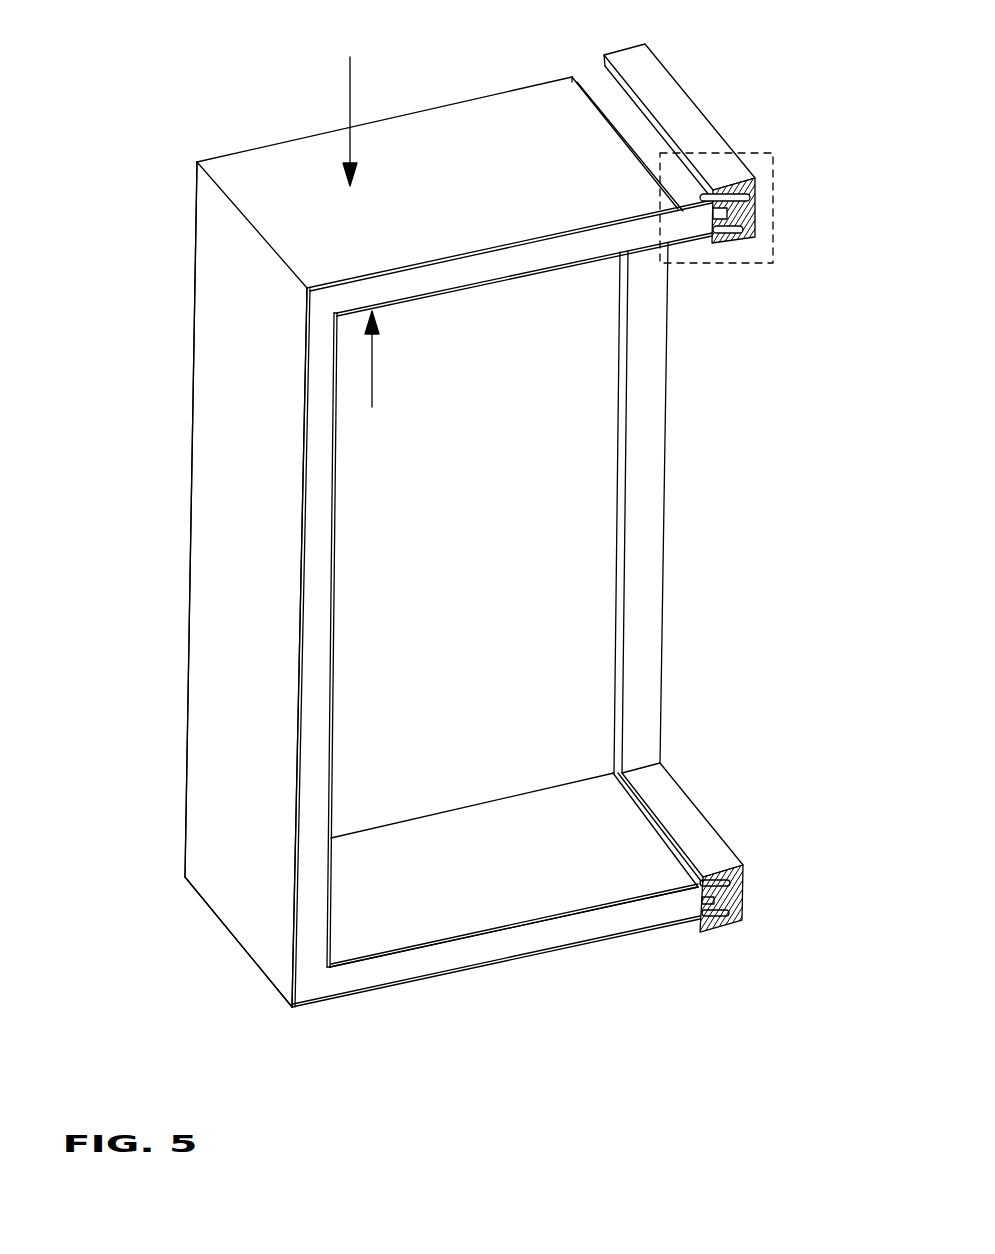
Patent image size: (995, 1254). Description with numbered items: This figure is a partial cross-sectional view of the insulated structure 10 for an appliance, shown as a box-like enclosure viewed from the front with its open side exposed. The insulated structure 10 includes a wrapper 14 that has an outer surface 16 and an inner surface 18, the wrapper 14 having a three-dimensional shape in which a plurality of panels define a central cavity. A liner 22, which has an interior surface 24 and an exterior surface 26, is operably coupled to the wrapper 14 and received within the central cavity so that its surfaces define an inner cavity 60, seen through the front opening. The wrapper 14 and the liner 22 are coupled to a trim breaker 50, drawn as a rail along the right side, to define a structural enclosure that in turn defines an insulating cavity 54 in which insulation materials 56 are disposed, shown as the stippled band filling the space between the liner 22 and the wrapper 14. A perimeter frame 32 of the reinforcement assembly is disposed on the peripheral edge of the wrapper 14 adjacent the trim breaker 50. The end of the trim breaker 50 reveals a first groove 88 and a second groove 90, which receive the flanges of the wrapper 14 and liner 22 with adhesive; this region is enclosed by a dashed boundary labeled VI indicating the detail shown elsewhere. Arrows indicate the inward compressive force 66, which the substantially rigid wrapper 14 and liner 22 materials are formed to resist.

The insulated structure 10 is at (120, 216).
The wrapper 14 is at (227, 329).
The outer surface 16 is at (232, 390).
The inner surface 18 is at (490, 960).
The liner 22 is at (332, 612).
The interior surface 24 is at (397, 953).
The exterior surface 26 is at (585, 850).
The perimeter frame 32 is at (625, 123).
The trim breaker 50 is at (685, 110).
The insulating cavity 54 is at (322, 457).
The insulation materials 56 is at (315, 568).
The inner cavity 60 is at (560, 548).
The inward compressive force 66 is at (345, 102).
The first groove 88 is at (757, 195).
The second groove 90 is at (758, 222).
The detail view VI boundary VI is at (772, 218).